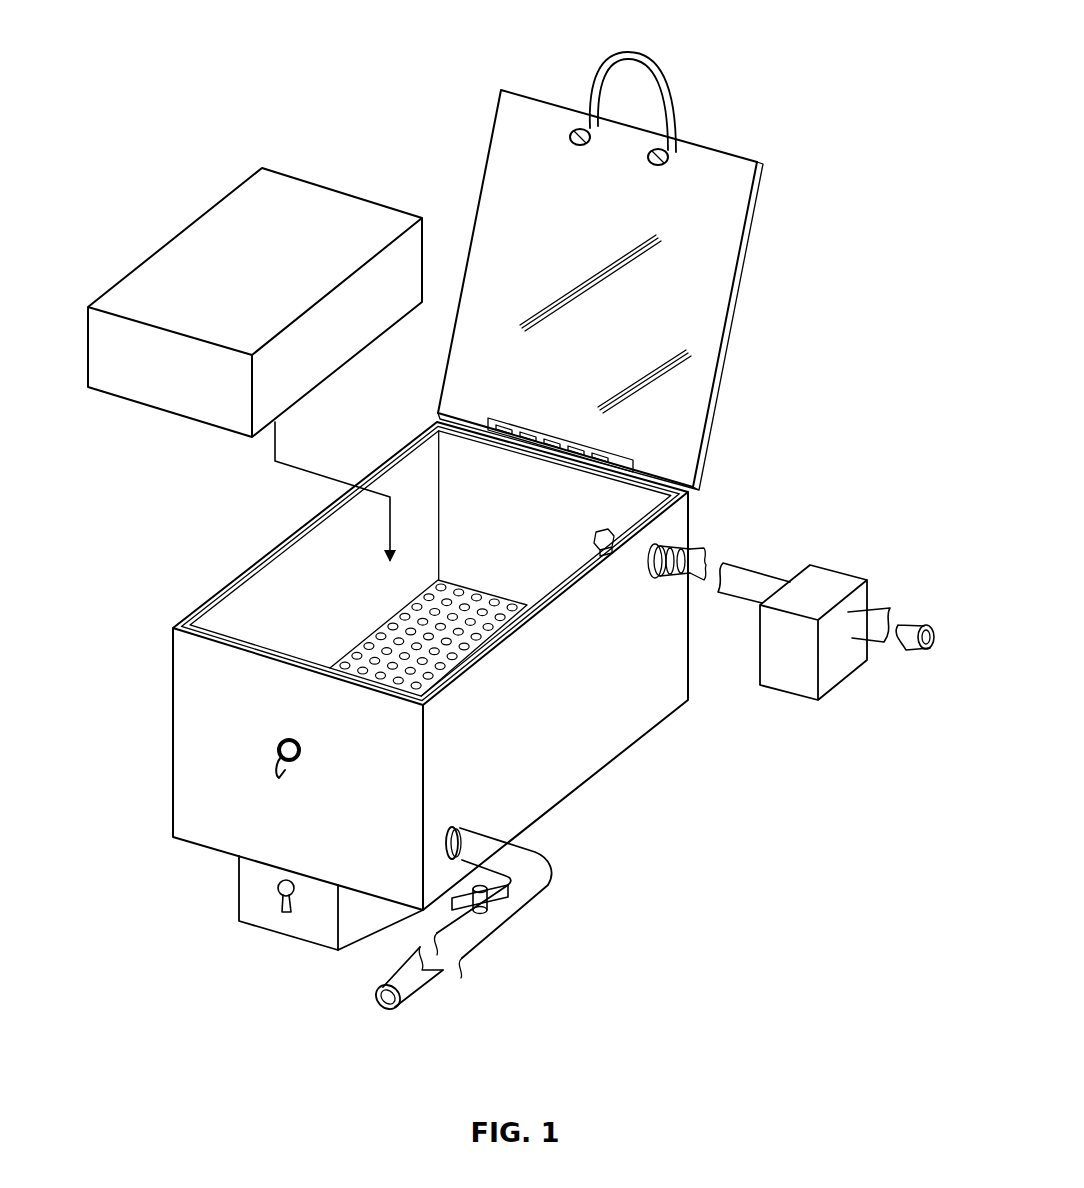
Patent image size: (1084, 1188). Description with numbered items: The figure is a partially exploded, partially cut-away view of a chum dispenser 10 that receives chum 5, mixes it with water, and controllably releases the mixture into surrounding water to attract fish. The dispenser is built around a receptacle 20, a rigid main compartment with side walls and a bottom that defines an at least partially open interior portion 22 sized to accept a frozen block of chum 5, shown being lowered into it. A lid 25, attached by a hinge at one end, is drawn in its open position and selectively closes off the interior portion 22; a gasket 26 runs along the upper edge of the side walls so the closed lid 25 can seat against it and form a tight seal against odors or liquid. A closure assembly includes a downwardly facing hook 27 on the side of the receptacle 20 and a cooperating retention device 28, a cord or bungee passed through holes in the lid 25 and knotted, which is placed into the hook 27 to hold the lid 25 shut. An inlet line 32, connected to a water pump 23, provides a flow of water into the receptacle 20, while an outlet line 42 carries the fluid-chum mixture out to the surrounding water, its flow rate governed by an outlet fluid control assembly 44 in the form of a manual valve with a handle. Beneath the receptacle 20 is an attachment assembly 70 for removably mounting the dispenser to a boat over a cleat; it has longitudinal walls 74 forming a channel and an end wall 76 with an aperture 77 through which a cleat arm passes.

The chum 5 is at (293, 200).
The chum dispenser 10 is at (792, 296).
The receptacle 20 is at (612, 745).
The interior portion 22 is at (297, 588).
The water pump 23 is at (823, 585).
The lid 25 is at (717, 167).
The gasket 26 is at (234, 583).
The hook 27 is at (278, 753).
The retention device 28 is at (622, 52).
The inlet line 32 is at (757, 580).
The outlet line 42 is at (545, 868).
The outlet fluid control assembly 44 is at (495, 912).
The attachment assembly 70 is at (188, 922).
The longitudinal walls 74 is at (348, 927).
The end wall 76 is at (250, 903).
The aperture 77 is at (277, 910).